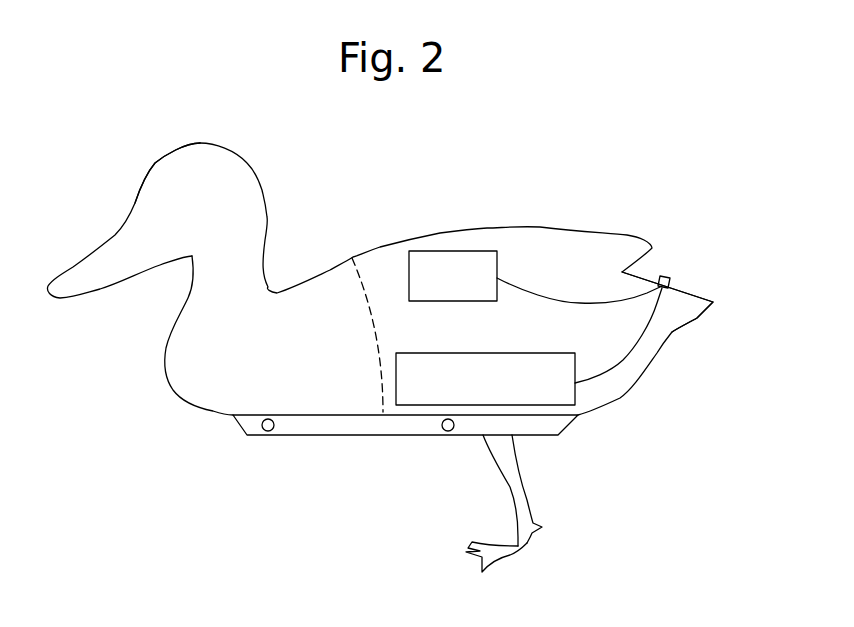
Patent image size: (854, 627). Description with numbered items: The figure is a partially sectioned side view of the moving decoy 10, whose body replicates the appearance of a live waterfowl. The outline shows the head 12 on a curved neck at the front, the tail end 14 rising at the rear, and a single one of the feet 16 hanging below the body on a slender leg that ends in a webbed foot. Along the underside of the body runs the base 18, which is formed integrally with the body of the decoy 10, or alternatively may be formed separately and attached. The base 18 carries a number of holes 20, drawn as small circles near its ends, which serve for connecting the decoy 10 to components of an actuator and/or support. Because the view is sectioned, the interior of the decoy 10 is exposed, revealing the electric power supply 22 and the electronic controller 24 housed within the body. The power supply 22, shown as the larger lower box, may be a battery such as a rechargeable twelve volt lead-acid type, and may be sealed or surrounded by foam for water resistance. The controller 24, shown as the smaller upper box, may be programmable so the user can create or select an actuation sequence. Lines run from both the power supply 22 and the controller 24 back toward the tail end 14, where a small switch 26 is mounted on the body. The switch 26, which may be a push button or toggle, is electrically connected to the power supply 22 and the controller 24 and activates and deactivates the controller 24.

The decoy 10 is at (679, 190).
The head 12 is at (168, 168).
The tail end 14 is at (708, 300).
The feet 16 is at (523, 542).
The base 18 is at (357, 427).
The holes 20 is at (266, 431).
The electric power supply 22 is at (552, 363).
The electronic controller 24 is at (462, 260).
The switch 26 is at (667, 273).